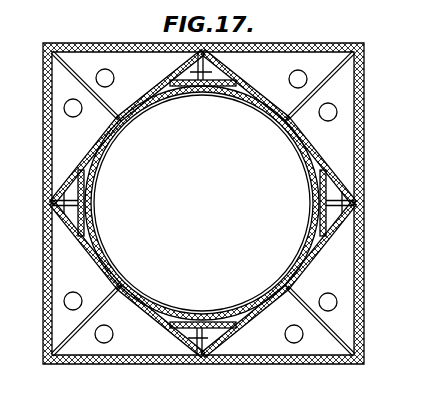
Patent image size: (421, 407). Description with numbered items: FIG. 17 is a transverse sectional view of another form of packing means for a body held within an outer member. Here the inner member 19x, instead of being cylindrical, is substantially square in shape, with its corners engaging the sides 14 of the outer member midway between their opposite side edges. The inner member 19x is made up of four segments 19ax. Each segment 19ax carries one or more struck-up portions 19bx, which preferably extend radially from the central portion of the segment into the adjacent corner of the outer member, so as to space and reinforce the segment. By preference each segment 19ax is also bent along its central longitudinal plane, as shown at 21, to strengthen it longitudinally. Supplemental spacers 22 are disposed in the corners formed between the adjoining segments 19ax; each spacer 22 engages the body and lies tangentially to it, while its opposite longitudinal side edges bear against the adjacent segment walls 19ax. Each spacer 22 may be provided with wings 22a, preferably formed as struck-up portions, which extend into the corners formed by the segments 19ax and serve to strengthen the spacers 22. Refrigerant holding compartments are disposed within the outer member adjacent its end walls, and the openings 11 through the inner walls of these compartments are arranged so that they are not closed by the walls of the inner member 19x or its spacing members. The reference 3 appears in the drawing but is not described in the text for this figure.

The cylindrical shell 3 is at (157, 314).
The openings 11 is at (338, 300).
The sides of the outer member 14 is at (420, 305).
The inner member 19x is at (203, 184).
The segments 19ax is at (332, 180).
The struck-up portions 19bx is at (336, 74).
The bend 21 is at (300, 296).
The supplemental spacers 22 is at (175, 93).
The wings 22a is at (204, 73).